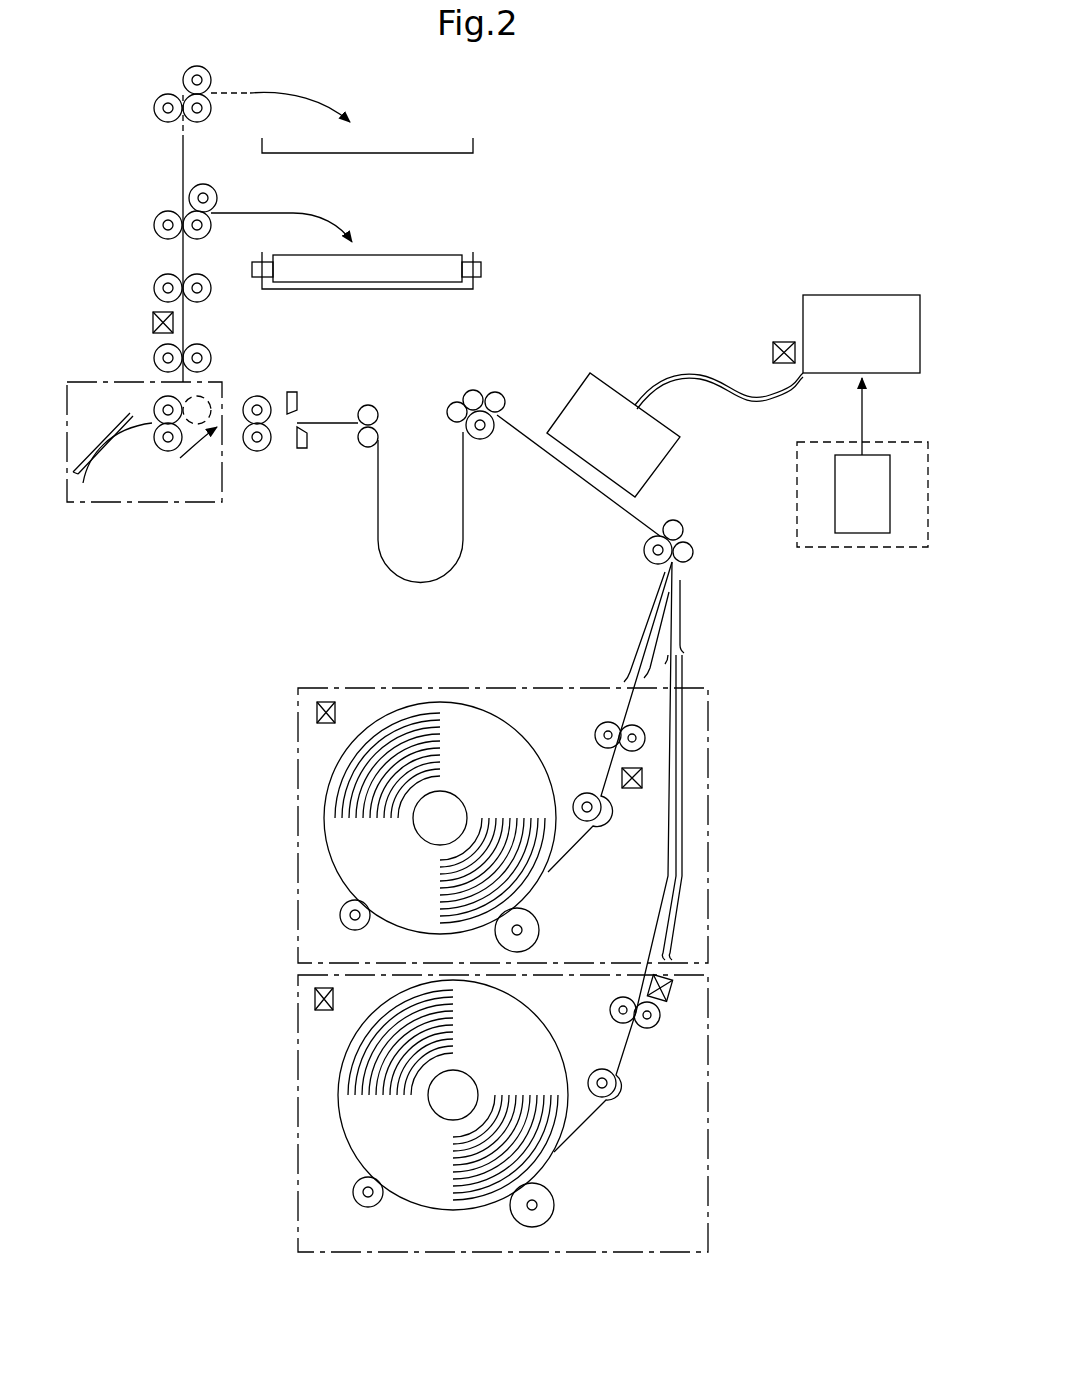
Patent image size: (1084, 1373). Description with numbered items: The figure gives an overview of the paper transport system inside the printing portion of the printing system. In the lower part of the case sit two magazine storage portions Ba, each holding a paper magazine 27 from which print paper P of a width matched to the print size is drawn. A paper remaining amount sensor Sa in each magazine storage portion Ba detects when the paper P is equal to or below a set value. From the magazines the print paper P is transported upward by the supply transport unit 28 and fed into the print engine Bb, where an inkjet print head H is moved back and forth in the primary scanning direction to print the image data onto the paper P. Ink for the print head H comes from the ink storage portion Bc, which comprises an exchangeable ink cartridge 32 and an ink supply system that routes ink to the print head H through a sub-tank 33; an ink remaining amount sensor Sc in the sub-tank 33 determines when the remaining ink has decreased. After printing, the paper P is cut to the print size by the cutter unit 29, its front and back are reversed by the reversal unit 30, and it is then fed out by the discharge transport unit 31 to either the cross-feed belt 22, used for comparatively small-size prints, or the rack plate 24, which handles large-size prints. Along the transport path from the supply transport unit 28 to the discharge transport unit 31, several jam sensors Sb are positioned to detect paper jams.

The cross-feed belt 22 is at (397, 262).
The rack plate 24 is at (403, 152).
The paper magazine 27 is at (298, 778).
The supply transport unit 28 is at (705, 675).
The cutter unit 29 is at (298, 380).
The reversal unit 30 is at (143, 502).
The discharge transport unit 31 is at (147, 213).
The ink cartridge 32 is at (840, 493).
The sub-tank 33 is at (868, 302).
The inkjet print head H is at (568, 395).
The paper remaining amount sensor Sa is at (324, 702).
The jam sensor Sb is at (153, 322).
The ink remaining amount sensor Sc is at (786, 342).
The magazine storage portion Ba is at (285, 843).
The print engine Bb is at (600, 350).
The ink storage portion Bc is at (833, 547).
The print paper P is at (475, 713).